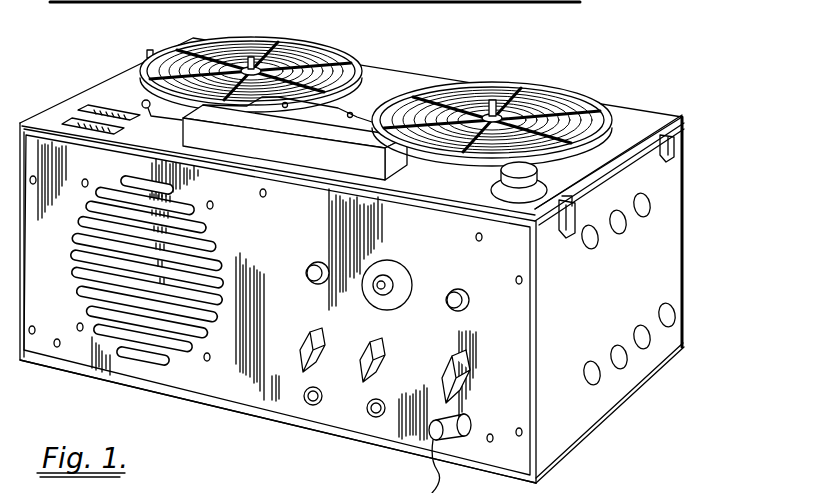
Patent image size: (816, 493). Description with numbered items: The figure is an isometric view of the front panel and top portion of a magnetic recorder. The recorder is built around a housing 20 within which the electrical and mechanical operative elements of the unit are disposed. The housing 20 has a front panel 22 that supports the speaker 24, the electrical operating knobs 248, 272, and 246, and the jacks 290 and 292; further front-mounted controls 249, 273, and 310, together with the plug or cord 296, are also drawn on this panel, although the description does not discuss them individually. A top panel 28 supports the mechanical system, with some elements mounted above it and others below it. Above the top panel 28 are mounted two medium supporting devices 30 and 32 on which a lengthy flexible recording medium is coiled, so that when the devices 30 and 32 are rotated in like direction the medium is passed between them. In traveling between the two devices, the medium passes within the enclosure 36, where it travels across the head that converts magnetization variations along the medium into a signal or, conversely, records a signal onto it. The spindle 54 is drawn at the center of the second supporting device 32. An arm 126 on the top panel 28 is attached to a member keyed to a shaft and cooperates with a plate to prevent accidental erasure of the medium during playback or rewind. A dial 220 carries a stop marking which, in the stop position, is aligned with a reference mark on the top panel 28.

The housing 20 is at (662, 277).
The front panel 22 is at (212, 380).
The speaker 24 is at (76, 252).
The top panel 28 is at (388, 83).
The medium supporting device 30 is at (299, 43).
The medium supporting device 32 is at (524, 88).
The enclosure 36 is at (288, 148).
The reel spindle 54 is at (470, 114).
The arm 126 is at (168, 123).
The dial 220 is at (548, 188).
The electrical operating knob 246 is at (470, 364).
The electrical operating knob 248 is at (311, 334).
The control knob 249 is at (313, 262).
The electrical operating knob 272 is at (386, 350).
The control knob 273 is at (465, 290).
The jack 290 is at (311, 406).
The jack 292 is at (373, 418).
The plug and cord 296 is at (442, 453).
The volume control knob 310 is at (400, 270).